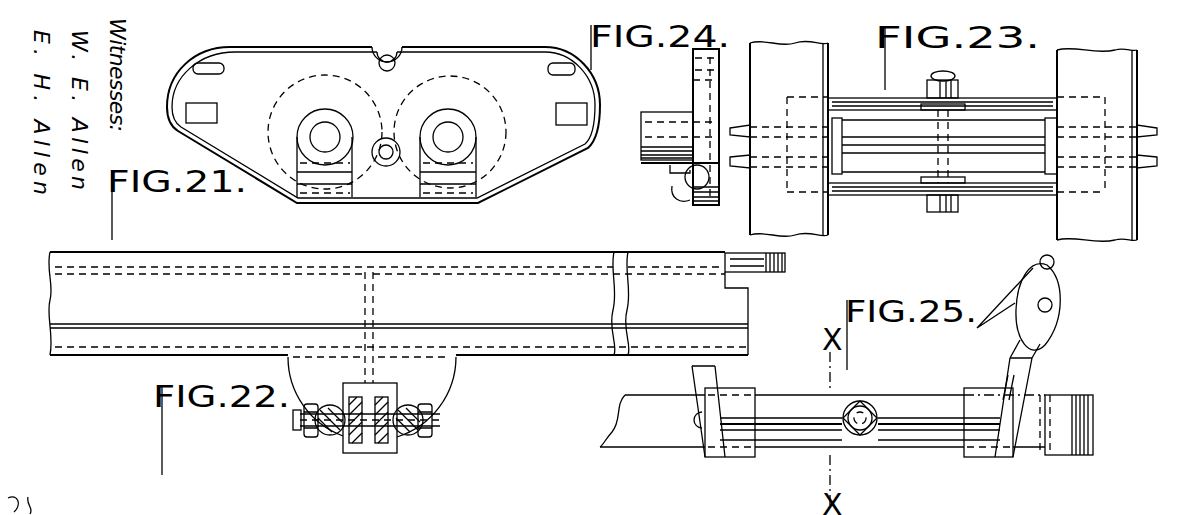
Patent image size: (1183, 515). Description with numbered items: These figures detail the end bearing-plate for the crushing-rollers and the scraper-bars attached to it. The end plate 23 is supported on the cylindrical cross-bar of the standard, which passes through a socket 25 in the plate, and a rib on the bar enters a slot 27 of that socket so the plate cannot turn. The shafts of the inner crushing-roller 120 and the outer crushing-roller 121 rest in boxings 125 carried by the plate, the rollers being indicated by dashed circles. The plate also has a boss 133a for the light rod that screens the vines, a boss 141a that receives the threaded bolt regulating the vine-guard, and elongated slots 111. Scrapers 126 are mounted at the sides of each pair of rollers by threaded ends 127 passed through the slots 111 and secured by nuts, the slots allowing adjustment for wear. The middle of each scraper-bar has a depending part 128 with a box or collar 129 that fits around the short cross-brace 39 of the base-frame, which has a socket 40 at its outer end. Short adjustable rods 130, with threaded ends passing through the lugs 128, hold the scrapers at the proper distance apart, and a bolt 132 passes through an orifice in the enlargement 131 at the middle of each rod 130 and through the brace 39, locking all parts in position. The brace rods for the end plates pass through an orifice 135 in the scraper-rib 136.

In FIG. 21, the end plate 23 is at (383, 125).
In FIG. 24, the end plate 23 is at (688, 127).
In FIG. 21, the socket 25 is at (312, 192).
In FIG. 24, the socket 25 is at (690, 188).
In FIG. 21, the slot 27 is at (330, 180).
In FIG. 24, the slot 27 is at (674, 174).
In FIG. 22, the cross-brace 39 is at (383, 440).
In FIG. 23, the cross-brace 39 is at (880, 163).
In FIG. 25, the cross-brace 39 is at (903, 447).
In FIG. 25, the socket 40 is at (1062, 452).
In FIG. 21, the slot 111 is at (226, 46).
In FIG. 21, the inner crushing-roller 120 is at (317, 75).
In FIG. 21, the outer crushing-roller 121 is at (457, 78).
In FIG. 21, the boxing 125 is at (323, 122).
In FIG. 24, the boxing 125 is at (645, 143).
In FIG. 22, the scraper 126 is at (398, 304).
In FIG. 23, the scraper 126 is at (943, 141).
In FIG. 25, the scraper 126 is at (862, 399).
In FIG. 22, the threaded end 127 is at (786, 262).
In FIG. 25, the threaded end 127 is at (1056, 262).
In FIG. 22, the depending part 128 is at (372, 354).
In FIG. 25, the depending part 128 is at (1008, 374).
In FIG. 22, the box or collar 129 is at (345, 390).
In FIG. 23, the box or collar 129 is at (843, 146).
In FIG. 25, the box or collar 129 is at (738, 455).
In FIG. 22, the adjustable rod 130 is at (318, 430).
In FIG. 23, the adjustable rod 130 is at (887, 103).
In FIG. 25, the adjustable rod 130 is at (798, 416).
In FIG. 22, the enlargement 131 is at (331, 435).
In FIG. 23, the enlargement 131 is at (958, 106).
In FIG. 25, the enlargement 131 is at (862, 435).
In FIG. 22, the bolt 132 is at (436, 428).
In FIG. 23, the bolt 132 is at (949, 212).
In FIG. 25, the bolt 132 is at (867, 408).
In FIG. 21, the boss 133a is at (397, 55).
In FIG. 25, the orifice 135 is at (1052, 307).
In FIG. 25, the scraper-rib 136 is at (1046, 333).
In FIG. 21, the boss 141a is at (410, 190).